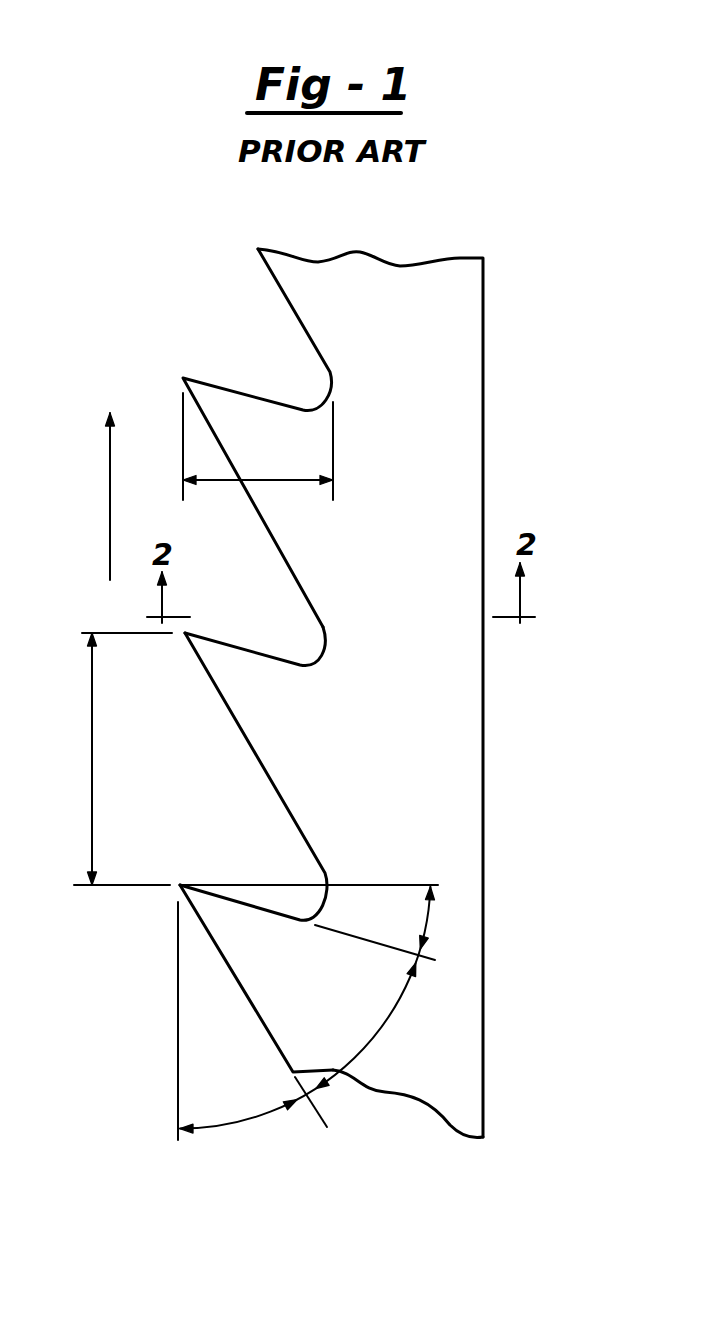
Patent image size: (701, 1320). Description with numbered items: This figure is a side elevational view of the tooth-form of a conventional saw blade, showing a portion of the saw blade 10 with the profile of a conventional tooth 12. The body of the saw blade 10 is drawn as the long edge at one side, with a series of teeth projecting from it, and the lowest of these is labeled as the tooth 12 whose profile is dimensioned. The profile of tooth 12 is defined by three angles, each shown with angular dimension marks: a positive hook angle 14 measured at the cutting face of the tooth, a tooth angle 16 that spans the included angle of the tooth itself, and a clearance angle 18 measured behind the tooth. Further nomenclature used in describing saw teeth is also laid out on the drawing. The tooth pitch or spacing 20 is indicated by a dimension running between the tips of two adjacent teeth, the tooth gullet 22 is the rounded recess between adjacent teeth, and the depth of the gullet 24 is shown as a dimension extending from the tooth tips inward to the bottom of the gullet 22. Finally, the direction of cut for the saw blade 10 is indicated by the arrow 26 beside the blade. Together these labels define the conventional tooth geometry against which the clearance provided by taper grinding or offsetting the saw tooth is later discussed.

The saw blade 10 is at (460, 764).
The tooth 12 is at (240, 950).
The positive hook angle 14 is at (428, 918).
The tooth angle 16 is at (381, 1027).
The clearance angle 18 is at (250, 1123).
The tooth pitch 20 is at (92, 732).
The tooth gullet 22 is at (263, 617).
The depth of the gullet 24 is at (262, 480).
The arrow 26 is at (110, 530).